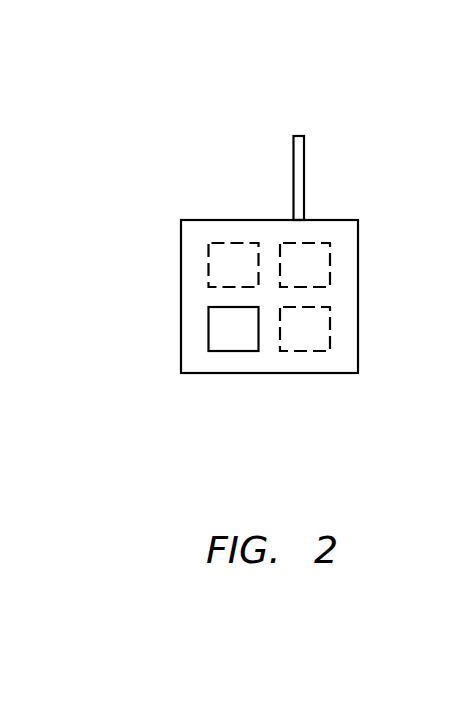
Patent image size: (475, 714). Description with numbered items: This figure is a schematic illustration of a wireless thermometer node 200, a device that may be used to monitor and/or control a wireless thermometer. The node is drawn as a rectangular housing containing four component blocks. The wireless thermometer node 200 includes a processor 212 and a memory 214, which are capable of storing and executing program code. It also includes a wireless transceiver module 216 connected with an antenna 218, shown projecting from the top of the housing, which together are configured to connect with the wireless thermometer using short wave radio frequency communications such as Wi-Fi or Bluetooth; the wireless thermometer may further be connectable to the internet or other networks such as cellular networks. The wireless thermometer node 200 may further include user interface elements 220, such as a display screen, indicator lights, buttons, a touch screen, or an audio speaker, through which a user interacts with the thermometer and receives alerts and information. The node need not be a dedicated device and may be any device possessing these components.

The wireless thermometer node 200 is at (358, 360).
The processor 212 is at (208, 266).
The memory 214 is at (330, 263).
The wireless transceiver module 216 is at (330, 327).
The antenna 218 is at (305, 150).
The user interface elements 220 is at (208, 321).